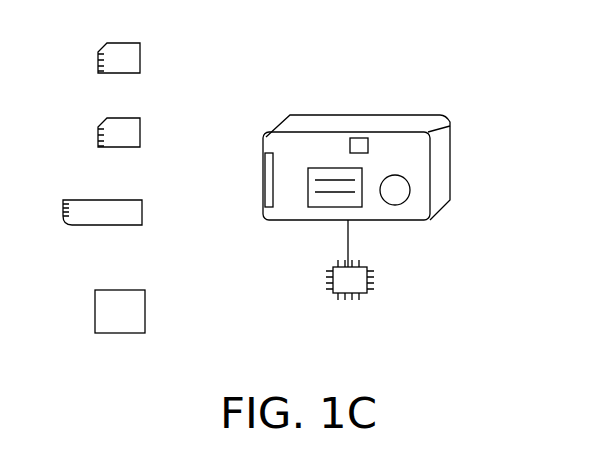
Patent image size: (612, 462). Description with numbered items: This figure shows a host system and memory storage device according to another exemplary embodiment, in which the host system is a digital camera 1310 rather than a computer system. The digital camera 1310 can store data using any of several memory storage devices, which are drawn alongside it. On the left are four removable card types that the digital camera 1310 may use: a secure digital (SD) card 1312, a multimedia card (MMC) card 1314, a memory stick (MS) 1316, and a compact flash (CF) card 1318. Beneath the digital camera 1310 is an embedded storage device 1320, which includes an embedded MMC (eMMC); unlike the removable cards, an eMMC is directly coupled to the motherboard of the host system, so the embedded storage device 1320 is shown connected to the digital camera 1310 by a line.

The digital camera 1310 is at (452, 153).
The secure digital (SD) card 1312 is at (142, 50).
The multimedia card (MMC) card 1314 is at (142, 125).
The memory stick (MS) 1316 is at (144, 212).
The compact flash (CF) card 1318 is at (146, 305).
The embedded storage device 1320 is at (375, 283).